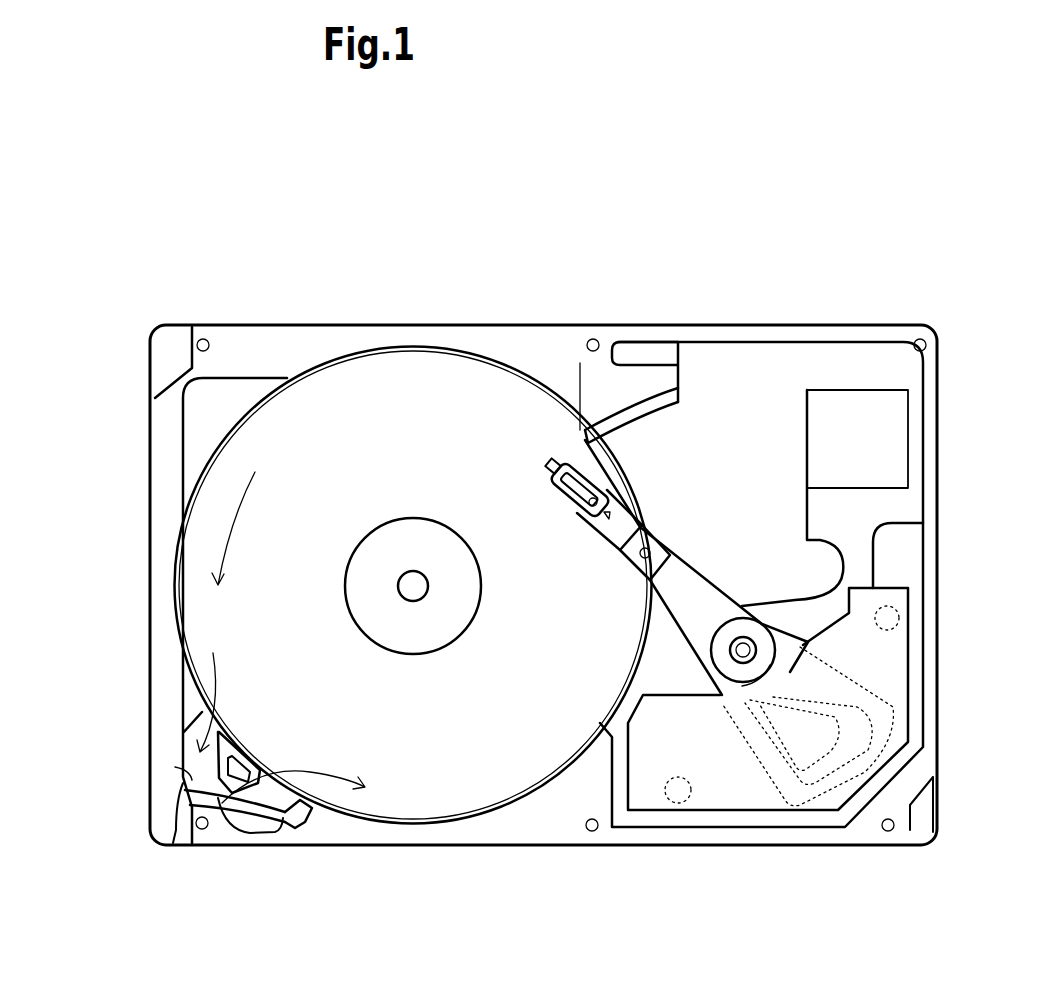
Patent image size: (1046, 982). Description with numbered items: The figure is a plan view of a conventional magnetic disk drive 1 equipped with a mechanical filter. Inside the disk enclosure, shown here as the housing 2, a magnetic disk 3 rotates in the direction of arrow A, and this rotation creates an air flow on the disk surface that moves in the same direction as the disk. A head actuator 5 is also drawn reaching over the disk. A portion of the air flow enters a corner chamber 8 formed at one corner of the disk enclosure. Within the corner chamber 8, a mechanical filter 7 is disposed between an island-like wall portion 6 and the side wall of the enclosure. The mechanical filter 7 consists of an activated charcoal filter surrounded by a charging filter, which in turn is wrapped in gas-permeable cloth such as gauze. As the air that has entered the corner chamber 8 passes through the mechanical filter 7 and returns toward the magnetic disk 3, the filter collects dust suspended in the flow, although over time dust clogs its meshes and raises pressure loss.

The magnetic disk drive 1 is at (458, 300).
The housing 2 is at (165, 475).
The magnetic disk 3 is at (378, 418).
The head actuator 5 is at (748, 580).
The island-like wall portion 6 is at (185, 795).
The mechanical filter 7 is at (282, 825).
The corner chamber 8 is at (195, 772).
The rotating direction arrow A is at (237, 522).